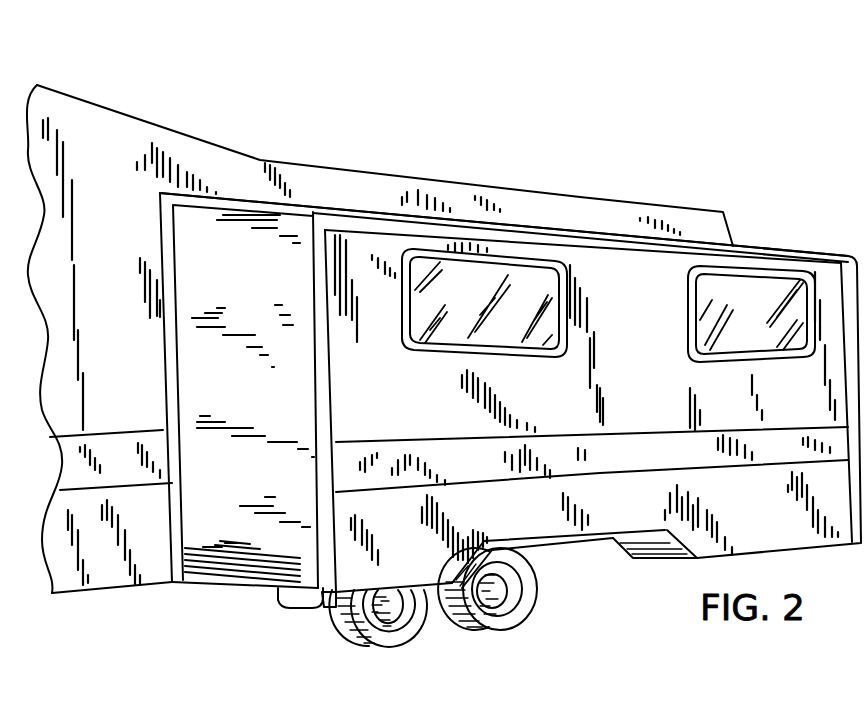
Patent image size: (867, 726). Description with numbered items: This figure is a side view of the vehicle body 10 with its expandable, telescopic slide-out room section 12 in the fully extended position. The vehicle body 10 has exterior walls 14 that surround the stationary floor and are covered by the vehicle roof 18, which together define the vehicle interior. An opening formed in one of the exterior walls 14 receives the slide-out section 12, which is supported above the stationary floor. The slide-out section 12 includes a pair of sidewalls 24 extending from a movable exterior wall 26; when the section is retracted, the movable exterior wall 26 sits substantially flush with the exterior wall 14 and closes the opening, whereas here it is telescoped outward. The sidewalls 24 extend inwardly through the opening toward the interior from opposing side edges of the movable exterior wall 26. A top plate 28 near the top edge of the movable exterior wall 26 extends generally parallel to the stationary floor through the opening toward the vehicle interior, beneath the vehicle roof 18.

The vehicle body 10 is at (510, 356).
The slide-out room section 12 is at (811, 252).
The exterior walls 14 is at (93, 130).
The vehicle roof 18 is at (558, 357).
The sidewalls 24 is at (255, 543).
The movable exterior wall 26 is at (628, 458).
The top plate 28 is at (420, 215).